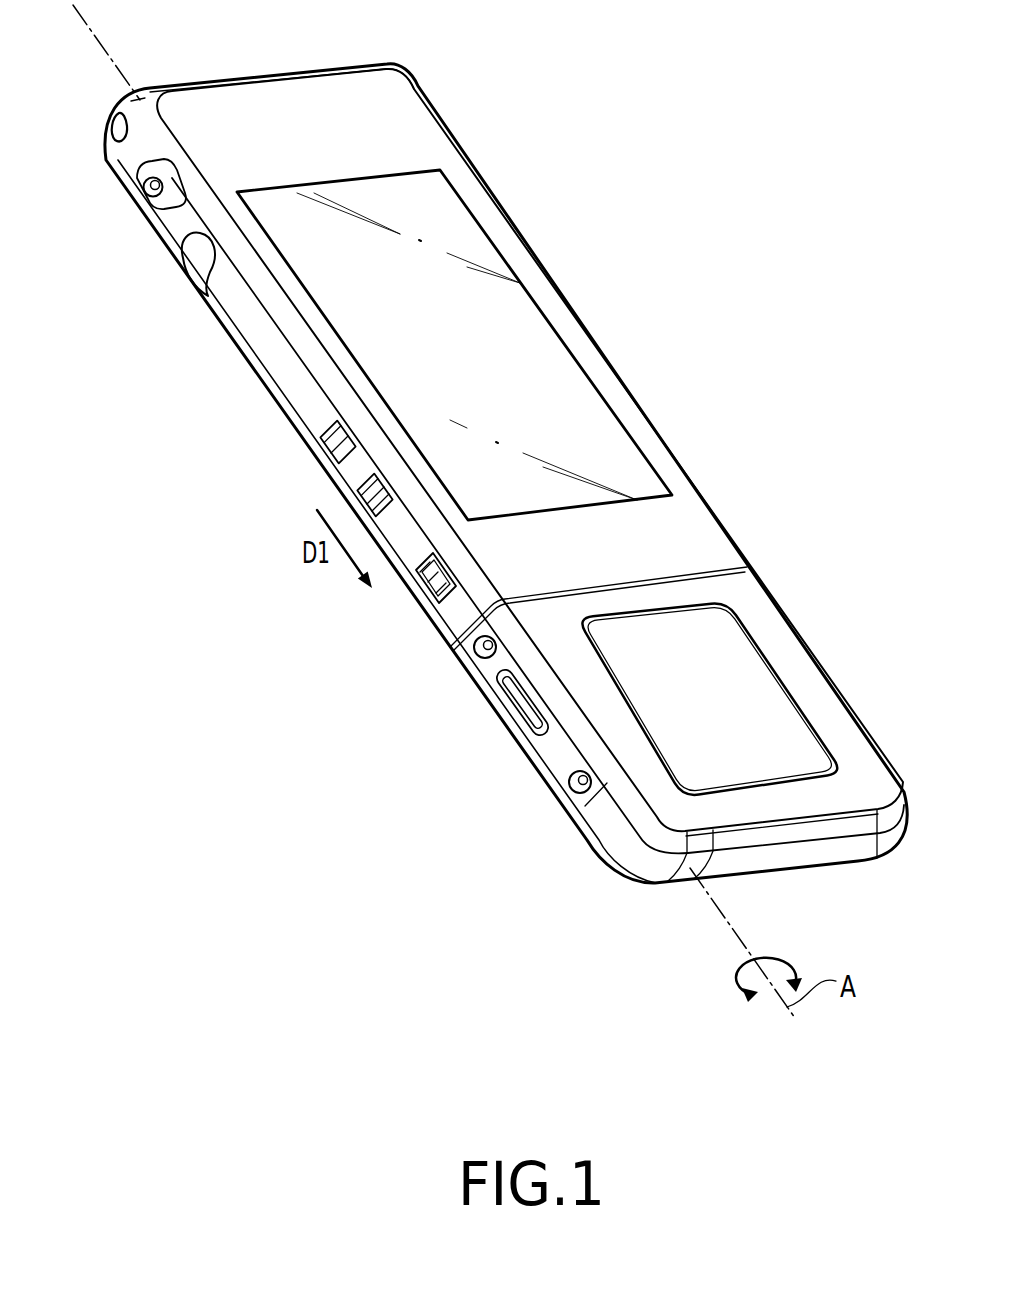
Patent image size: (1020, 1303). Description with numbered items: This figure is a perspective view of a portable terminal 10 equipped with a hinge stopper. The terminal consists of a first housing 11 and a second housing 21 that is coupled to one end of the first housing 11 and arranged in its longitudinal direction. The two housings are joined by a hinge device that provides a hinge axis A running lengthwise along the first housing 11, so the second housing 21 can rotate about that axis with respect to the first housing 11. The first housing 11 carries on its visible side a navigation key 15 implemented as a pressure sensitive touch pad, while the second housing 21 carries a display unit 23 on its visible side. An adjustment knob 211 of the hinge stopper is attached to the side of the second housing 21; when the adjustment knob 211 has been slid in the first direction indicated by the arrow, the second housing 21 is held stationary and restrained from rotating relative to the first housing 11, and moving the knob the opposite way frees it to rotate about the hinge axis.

The portable terminal 10 is at (627, 84).
The first housing 11 is at (862, 687).
The navigation key 15 is at (727, 660).
The second housing 21 is at (150, 270).
The adjustment knob 211 is at (433, 573).
The display unit 23 is at (513, 333).